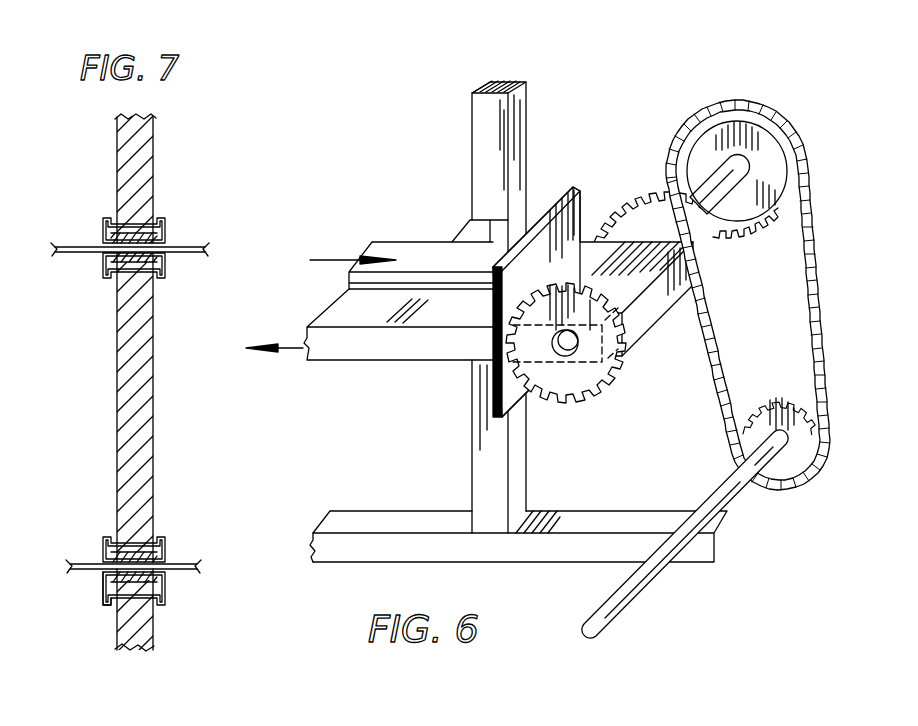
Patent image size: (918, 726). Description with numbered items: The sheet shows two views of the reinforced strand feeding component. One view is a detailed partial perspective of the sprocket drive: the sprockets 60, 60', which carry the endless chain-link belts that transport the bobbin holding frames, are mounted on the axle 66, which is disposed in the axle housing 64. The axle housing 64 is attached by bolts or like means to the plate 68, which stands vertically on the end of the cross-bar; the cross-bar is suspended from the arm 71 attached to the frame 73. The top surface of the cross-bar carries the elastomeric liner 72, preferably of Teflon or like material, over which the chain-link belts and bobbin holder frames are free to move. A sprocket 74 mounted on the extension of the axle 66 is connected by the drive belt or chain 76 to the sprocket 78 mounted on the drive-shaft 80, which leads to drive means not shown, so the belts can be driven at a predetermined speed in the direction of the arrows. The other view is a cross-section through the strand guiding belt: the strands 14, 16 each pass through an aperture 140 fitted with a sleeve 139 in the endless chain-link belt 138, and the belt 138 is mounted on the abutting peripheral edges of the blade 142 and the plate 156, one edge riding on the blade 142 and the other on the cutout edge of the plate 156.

In FIG. 7, the strand 14 is at (192, 258).
In FIG. 7, the strand 16 is at (196, 576).
In FIG. 6, the sprocket 60 is at (686, 192).
In FIG. 6, the sprocket 60' is at (575, 359).
In FIG. 6, the axle housing 64 is at (642, 305).
In FIG. 6, the axle 66 is at (560, 357).
In FIG. 6, the plate 68 is at (556, 192).
In FIG. 6, the arm 71 is at (470, 232).
In FIG. 6, the elastomeric liner 72 is at (423, 262).
In FIG. 6, the frame 73 is at (472, 150).
In FIG. 6, the sprocket 74 is at (757, 147).
In FIG. 6, the drive belt or chain 76 is at (800, 283).
In FIG. 6, the sprocket 78 is at (803, 437).
In FIG. 6, the drive-shaft 80 is at (733, 485).
In FIG. 7, the endless chain-link belt 138 is at (165, 224).
In FIG. 7, the sleeve 139 is at (170, 578).
In FIG. 7, the aperture 140 is at (103, 578).
In FIG. 7, the blade 142 is at (153, 386).
In FIG. 7, the plate 156 is at (153, 150).